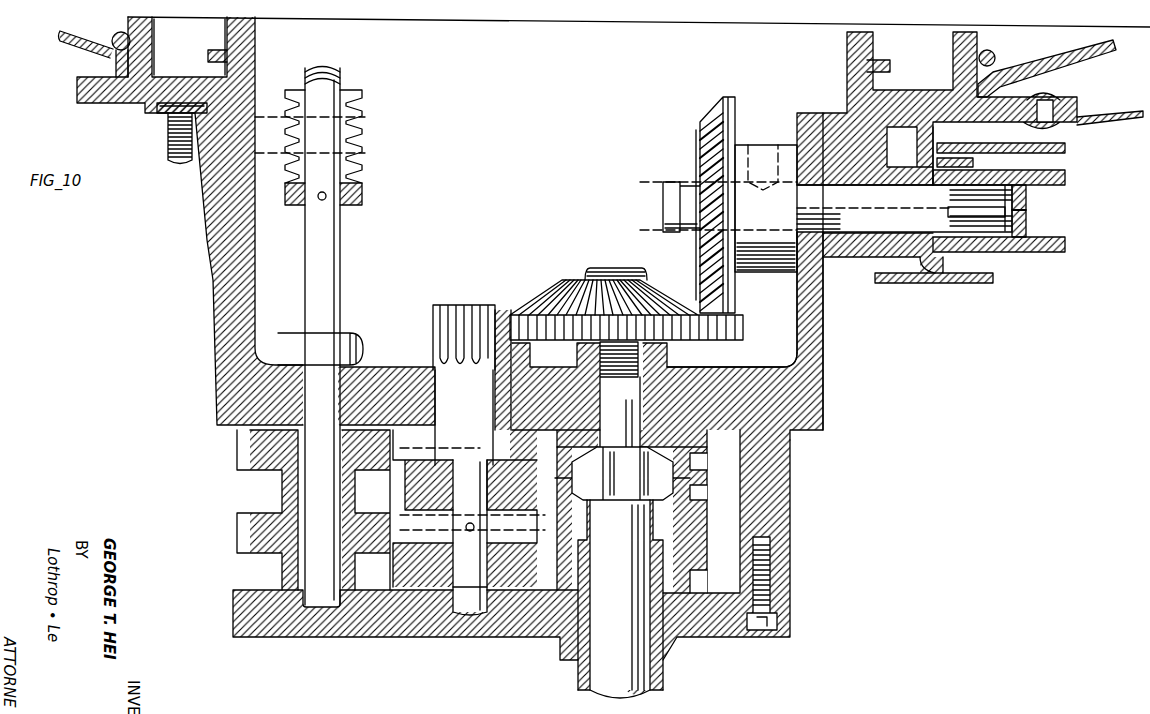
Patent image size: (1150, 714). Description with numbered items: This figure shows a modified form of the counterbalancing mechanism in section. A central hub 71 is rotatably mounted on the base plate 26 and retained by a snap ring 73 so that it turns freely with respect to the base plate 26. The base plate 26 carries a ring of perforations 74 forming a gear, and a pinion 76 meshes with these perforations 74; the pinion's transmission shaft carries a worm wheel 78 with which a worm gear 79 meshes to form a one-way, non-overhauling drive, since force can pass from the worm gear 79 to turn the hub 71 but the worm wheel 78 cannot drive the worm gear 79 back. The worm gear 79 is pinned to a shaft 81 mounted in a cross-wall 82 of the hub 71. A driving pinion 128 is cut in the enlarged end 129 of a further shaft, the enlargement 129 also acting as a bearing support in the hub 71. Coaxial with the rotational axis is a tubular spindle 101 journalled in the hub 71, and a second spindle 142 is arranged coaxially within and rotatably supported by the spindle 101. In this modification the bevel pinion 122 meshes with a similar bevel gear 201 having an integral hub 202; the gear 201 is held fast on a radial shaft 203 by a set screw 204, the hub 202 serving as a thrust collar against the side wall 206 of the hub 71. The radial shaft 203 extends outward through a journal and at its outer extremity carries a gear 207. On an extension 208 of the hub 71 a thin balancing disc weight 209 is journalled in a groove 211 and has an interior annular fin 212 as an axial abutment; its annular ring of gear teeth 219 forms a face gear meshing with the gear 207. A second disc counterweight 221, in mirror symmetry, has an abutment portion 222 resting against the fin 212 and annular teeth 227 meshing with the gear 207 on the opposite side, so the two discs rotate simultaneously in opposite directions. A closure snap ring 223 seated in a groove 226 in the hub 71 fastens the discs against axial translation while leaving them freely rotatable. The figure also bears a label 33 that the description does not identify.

The lever arm 33 is at (114, 36).
The snap ring 73 is at (212, 50).
The base plate 26 is at (155, 75).
The ring of perforations 74 is at (162, 113).
The pinion 76 is at (179, 161).
The worm wheel 78 is at (340, 67).
The worm gear 79 is at (362, 157).
The shaft 81 is at (330, 291).
The cross-wall 82 is at (406, 365).
The driving pinion 128 is at (435, 308).
The enlarged end 129 is at (470, 413).
The bevel pinion 122 is at (526, 300).
The bevel gear 201 is at (700, 136).
The radial shaft 203 is at (668, 200).
The set screw 204 is at (775, 137).
The hub 202 is at (750, 274).
The side wall 206 is at (823, 325).
The central hub 71 is at (812, 382).
The groove 226 is at (905, 163).
The closure snap ring 223 is at (975, 146).
The annular teeth 227 is at (1020, 174).
The disc counterweight 221 is at (1030, 188).
The abutment portion 222 is at (1027, 202).
The interior annular fin 212 is at (1027, 225).
The annular ring of gear teeth 219 is at (990, 248).
The gear 207 is at (1000, 236).
The balancing disc weight 209 is at (1047, 253).
The extension 208 is at (878, 283).
The groove 211 is at (925, 273).
The tubular spindle 101 is at (578, 675).
The spindle 142 is at (663, 690).